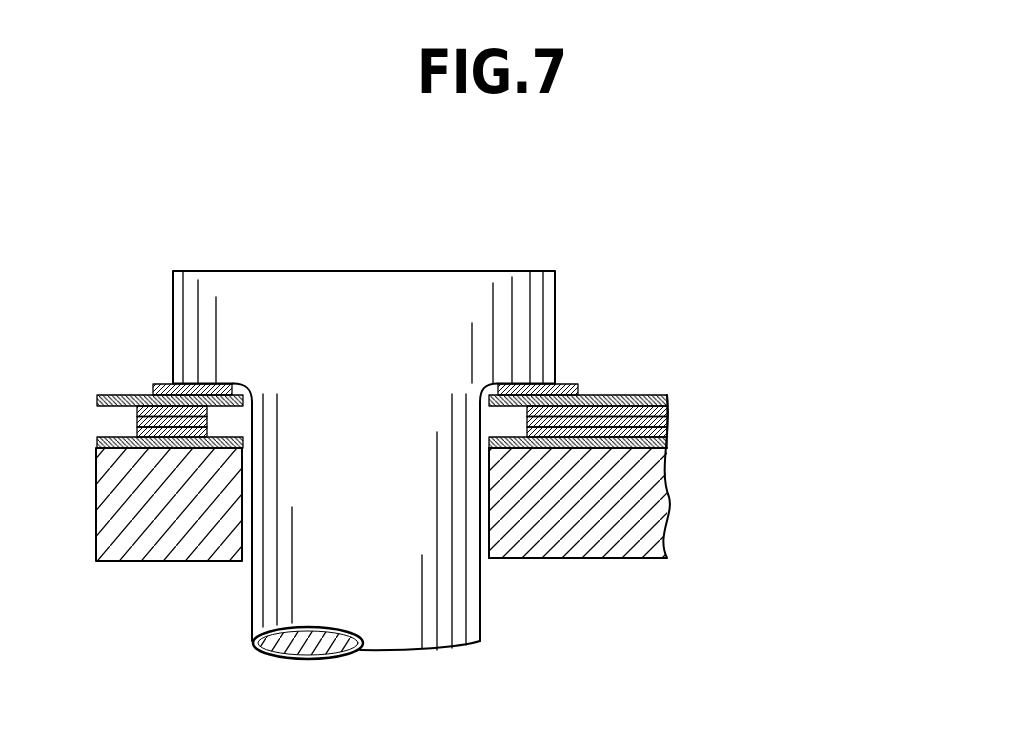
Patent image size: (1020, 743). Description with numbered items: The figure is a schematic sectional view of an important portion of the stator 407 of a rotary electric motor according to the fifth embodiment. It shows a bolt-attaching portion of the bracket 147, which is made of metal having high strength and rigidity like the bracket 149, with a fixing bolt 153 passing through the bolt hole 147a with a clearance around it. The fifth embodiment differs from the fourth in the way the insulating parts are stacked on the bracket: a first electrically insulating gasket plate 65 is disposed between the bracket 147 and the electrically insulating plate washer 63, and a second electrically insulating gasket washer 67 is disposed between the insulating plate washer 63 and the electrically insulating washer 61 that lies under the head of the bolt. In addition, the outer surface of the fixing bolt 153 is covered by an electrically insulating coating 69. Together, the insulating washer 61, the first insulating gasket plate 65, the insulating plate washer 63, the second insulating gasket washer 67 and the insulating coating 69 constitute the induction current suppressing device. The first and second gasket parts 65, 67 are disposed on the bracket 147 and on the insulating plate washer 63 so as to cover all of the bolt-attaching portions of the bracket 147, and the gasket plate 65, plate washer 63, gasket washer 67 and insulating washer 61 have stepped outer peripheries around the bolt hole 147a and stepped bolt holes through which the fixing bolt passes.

The stator 407 is at (578, 198).
The fixing bolt 153 is at (475, 268).
The insulating washer 61 is at (583, 381).
The insulating plate washer 63 is at (647, 398).
The first insulating gasket plate 65 is at (110, 435).
The second insulating gasket washer 67 is at (118, 395).
The insulating coating 69 is at (272, 592).
The bracket 147 is at (650, 502).
The bracket 149 is at (383, 478).
The bolt hole 147a is at (488, 520).